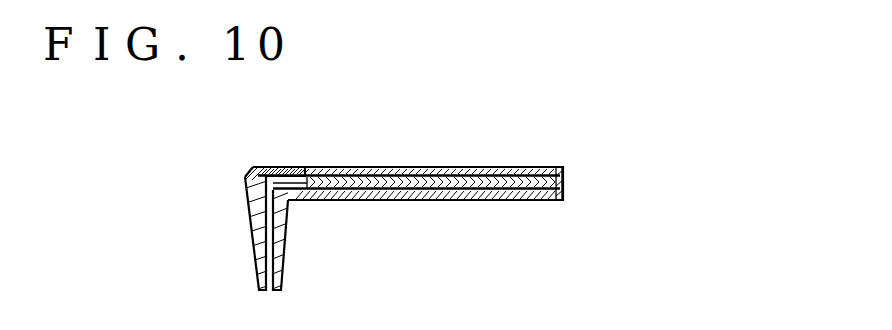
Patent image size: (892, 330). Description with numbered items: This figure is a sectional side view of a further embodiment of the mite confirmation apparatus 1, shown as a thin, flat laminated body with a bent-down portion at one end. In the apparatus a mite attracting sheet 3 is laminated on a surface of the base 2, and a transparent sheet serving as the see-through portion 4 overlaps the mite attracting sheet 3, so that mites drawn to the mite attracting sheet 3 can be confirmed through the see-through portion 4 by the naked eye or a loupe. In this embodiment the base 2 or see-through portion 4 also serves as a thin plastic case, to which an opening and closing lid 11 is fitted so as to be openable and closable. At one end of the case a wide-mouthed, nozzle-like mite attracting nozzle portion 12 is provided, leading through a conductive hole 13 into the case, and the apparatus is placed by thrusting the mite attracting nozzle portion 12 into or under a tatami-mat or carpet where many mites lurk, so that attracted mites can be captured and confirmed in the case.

The mite confirmation apparatus 1 is at (305, 166).
The base 2 is at (387, 167).
The mite attracting sheet 3 is at (444, 172).
The see-through portion 4 is at (401, 200).
The opening and closing lid 11 is at (518, 167).
The mite attracting nozzle portion 12 is at (252, 225).
The conductive hole 13 is at (253, 169).